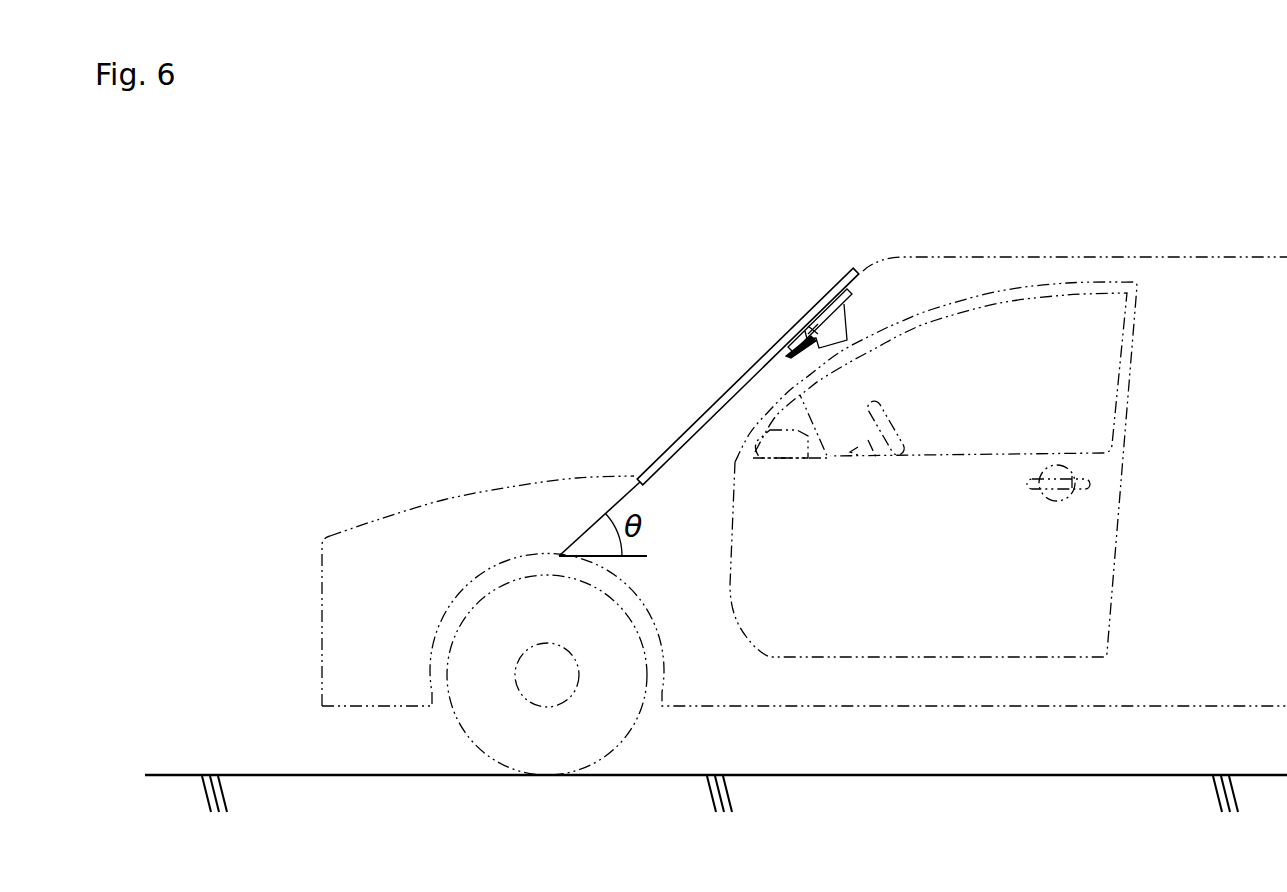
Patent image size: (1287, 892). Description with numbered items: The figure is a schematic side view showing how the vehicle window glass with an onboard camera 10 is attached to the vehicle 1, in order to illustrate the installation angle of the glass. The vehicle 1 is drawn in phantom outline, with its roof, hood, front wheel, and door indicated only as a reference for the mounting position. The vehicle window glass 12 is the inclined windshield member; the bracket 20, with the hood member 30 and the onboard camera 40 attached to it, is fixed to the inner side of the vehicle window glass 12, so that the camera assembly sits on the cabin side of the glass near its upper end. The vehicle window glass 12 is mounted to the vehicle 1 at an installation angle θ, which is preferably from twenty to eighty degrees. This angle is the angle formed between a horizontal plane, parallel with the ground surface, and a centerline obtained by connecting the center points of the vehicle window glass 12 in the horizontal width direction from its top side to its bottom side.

The vehicle 1 is at (1120, 257).
The vehicle window glass with an onboard camera 10 is at (673, 285).
The vehicle window glass 12 is at (695, 427).
The bracket 20 is at (818, 328).
The hood member 30 is at (800, 345).
The onboard camera 40 is at (812, 328).